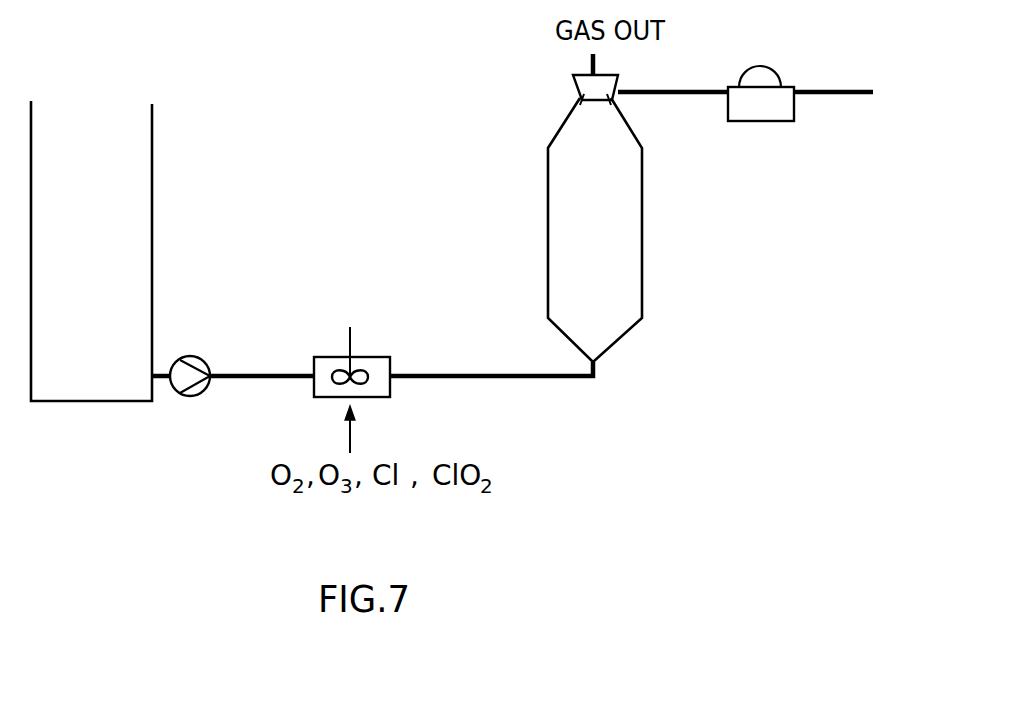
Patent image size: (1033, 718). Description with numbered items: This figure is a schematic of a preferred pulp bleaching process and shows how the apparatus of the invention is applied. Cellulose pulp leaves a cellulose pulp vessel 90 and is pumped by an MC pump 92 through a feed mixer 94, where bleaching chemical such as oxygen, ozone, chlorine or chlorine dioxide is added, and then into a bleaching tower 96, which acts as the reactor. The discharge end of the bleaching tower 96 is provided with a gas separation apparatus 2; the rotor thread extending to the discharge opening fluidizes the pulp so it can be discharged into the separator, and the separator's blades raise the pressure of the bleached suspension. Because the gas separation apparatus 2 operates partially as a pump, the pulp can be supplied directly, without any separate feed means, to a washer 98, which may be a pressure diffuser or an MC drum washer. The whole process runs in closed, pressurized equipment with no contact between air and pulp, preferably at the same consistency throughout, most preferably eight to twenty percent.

The gas separation apparatus 2 is at (580, 92).
The cellulose pulp vessel 90 is at (135, 272).
The MC pump 92 is at (205, 357).
The feed mixer 94 is at (378, 355).
The bleaching tower 96 is at (565, 250).
The washer 98 is at (783, 92).